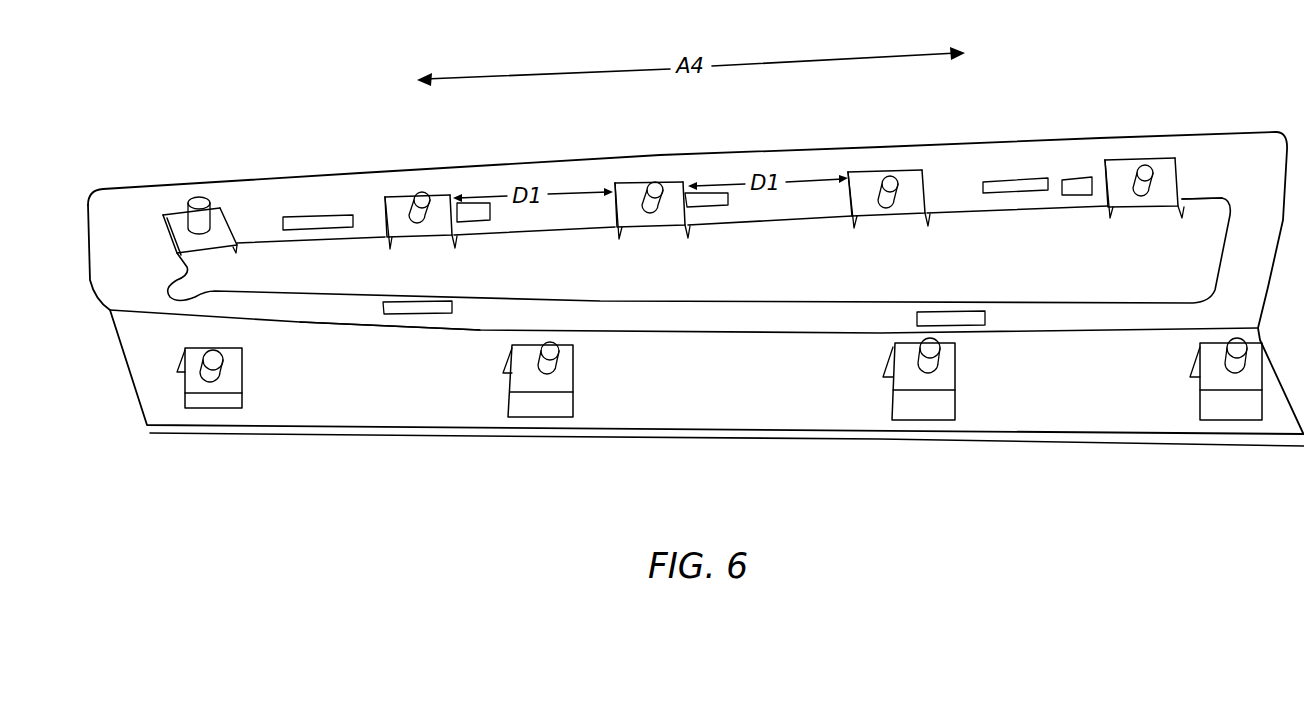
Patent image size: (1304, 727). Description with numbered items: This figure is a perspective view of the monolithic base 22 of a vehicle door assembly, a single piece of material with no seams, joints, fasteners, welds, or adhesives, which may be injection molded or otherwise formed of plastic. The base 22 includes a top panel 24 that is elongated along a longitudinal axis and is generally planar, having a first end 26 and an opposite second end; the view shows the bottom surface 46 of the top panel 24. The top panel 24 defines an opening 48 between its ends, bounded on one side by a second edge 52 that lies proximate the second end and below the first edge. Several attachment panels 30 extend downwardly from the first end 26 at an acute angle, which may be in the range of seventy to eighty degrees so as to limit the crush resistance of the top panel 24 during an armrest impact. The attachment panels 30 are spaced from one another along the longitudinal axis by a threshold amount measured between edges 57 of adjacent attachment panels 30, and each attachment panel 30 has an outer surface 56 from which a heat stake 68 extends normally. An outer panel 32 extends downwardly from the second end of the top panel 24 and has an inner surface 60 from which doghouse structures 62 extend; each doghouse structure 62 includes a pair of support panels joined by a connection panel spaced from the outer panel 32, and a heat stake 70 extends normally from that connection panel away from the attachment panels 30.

The monolithic base 22 is at (277, 103).
The top panel 24 is at (1080, 318).
The first end 26 is at (1037, 153).
The attachment panel 30 is at (205, 243).
The outer panel 32 is at (662, 400).
The bottom surface 46 is at (944, 187).
The opening 48 is at (758, 284).
The second edge 52 is at (687, 210).
The outer surface 56 is at (215, 213).
The edges 57 is at (452, 238).
The inner surface 60 is at (713, 384).
The doghouse structure 62 is at (237, 403).
The heat stake 68 is at (193, 205).
The heat stake 70 is at (224, 359).